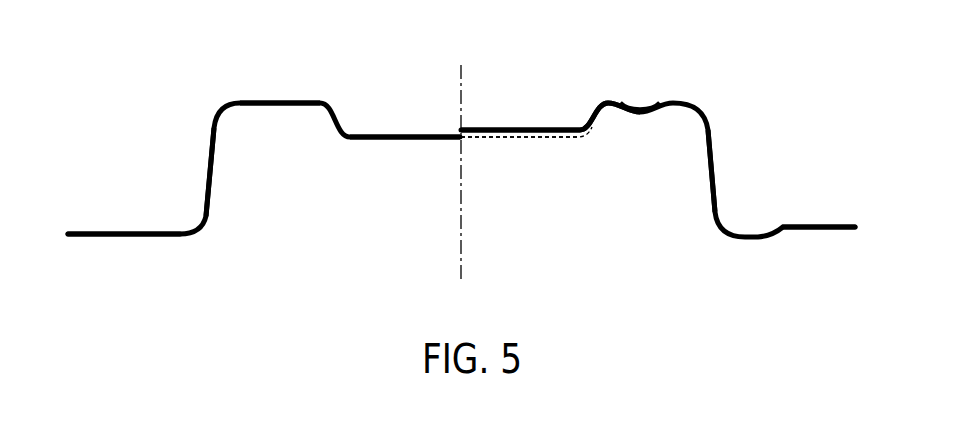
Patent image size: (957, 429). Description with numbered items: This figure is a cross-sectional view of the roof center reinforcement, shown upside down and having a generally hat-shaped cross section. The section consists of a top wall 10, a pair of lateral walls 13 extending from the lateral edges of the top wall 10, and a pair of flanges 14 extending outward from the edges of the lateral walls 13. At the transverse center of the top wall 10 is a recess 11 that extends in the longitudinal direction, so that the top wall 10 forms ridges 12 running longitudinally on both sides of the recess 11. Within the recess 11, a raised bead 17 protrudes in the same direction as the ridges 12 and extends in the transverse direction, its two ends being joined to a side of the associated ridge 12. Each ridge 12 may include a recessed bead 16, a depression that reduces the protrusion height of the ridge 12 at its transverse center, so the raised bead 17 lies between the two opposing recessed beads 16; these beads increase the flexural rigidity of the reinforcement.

The top wall 10 is at (461, 136).
The recess 11 is at (379, 137).
The ridge 12 is at (275, 103).
The lateral wall 13 is at (208, 167).
The flange 14 is at (114, 232).
The recessed bead 16 is at (641, 112).
The raised bead 17 is at (517, 130).